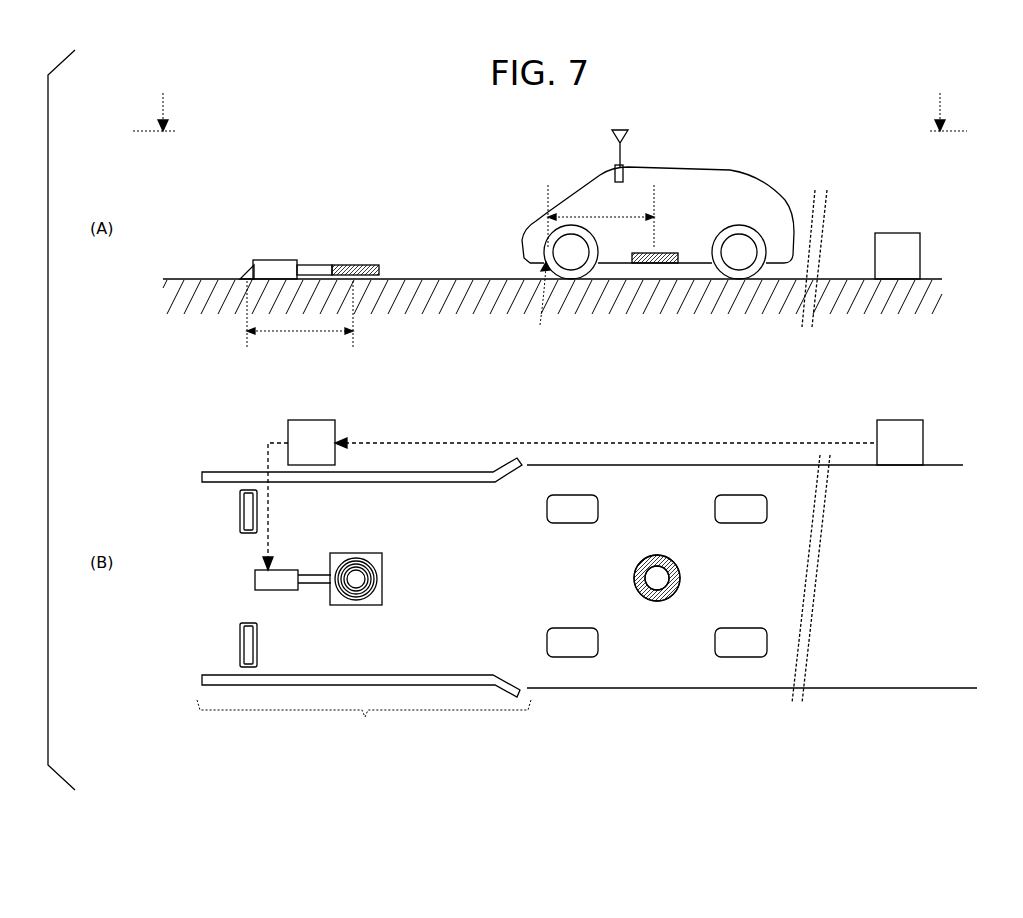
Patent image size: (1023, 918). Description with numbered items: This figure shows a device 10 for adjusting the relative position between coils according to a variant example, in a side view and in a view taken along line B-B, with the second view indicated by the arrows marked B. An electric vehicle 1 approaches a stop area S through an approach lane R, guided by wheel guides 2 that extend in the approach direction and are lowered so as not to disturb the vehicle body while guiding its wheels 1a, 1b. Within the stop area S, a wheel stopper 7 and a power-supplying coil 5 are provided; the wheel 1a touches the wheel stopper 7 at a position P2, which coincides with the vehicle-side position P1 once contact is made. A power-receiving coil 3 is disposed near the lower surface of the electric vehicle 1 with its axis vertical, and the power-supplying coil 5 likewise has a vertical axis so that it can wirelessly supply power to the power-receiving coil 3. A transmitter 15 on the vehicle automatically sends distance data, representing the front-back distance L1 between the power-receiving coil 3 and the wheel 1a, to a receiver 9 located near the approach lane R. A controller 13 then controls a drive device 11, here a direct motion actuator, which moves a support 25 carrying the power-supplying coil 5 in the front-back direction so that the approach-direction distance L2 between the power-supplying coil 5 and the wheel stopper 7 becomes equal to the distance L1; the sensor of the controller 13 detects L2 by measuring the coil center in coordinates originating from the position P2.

The electric vehicle 1 is at (720, 168).
The wheel 1a is at (576, 232).
The wheel 1b is at (765, 230).
The wheel guide 2 is at (434, 483).
The power-receiving coil 3 is at (666, 253).
The power-supplying coil 5 is at (368, 264).
The wheel stopper 7 is at (240, 276).
The receiver 9 is at (904, 267).
The device for adjusting the relative position between the coils 10 is at (252, 138).
The drive device 11 is at (290, 259).
The controller 13 is at (323, 453).
The transmitter 15 is at (626, 128).
The support 25 is at (363, 290).
The position P1 is at (539, 304).
The position P2 is at (250, 265).
The distance in the front-back direction L1 is at (601, 216).
The distance in the approach direction L2 is at (300, 323).
The approach lane R is at (618, 272).
The stop area S is at (364, 724).
The line B- B is at (550, 111).